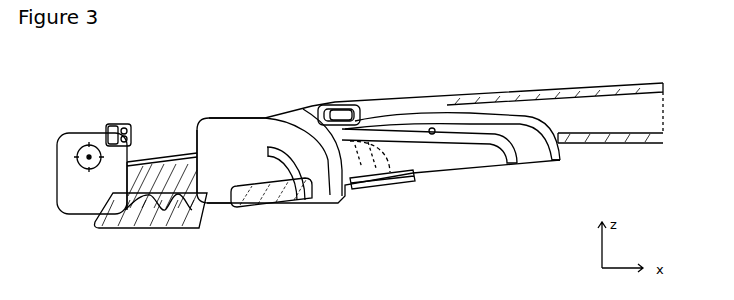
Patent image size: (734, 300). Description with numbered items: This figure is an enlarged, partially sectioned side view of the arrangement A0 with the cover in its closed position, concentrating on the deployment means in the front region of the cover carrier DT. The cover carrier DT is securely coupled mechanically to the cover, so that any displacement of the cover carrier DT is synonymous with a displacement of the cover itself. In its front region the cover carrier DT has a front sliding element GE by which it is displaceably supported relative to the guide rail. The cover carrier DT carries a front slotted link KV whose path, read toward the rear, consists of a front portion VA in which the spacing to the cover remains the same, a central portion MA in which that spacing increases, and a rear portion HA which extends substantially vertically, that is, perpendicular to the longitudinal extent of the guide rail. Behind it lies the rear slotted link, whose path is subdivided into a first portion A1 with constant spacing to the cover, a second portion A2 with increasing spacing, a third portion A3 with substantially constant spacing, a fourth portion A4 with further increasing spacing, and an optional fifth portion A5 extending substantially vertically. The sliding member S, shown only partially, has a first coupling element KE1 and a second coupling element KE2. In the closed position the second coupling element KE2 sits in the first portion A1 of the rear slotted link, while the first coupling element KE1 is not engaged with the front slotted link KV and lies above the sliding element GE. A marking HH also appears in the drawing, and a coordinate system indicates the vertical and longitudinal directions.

The sliding member S is at (390, 190).
The cover carrier DT is at (648, 94).
The arrangement A0 is at (632, 45).
The front sliding element GE is at (124, 222).
The first coupling element KE1 is at (138, 123).
The front slotted link KV is at (287, 130).
The front portion VA is at (267, 153).
The central portion MA is at (290, 180).
The second coupling element KE2 is at (320, 107).
The first portion A1 is at (346, 97).
The second portion A2 is at (444, 105).
The third portion A3 is at (489, 152).
The fourth portion A4 is at (556, 121).
The fifth portion A5 is at (573, 161).
The rear portion HA is at (325, 198).
The holding axis HH is at (432, 134).